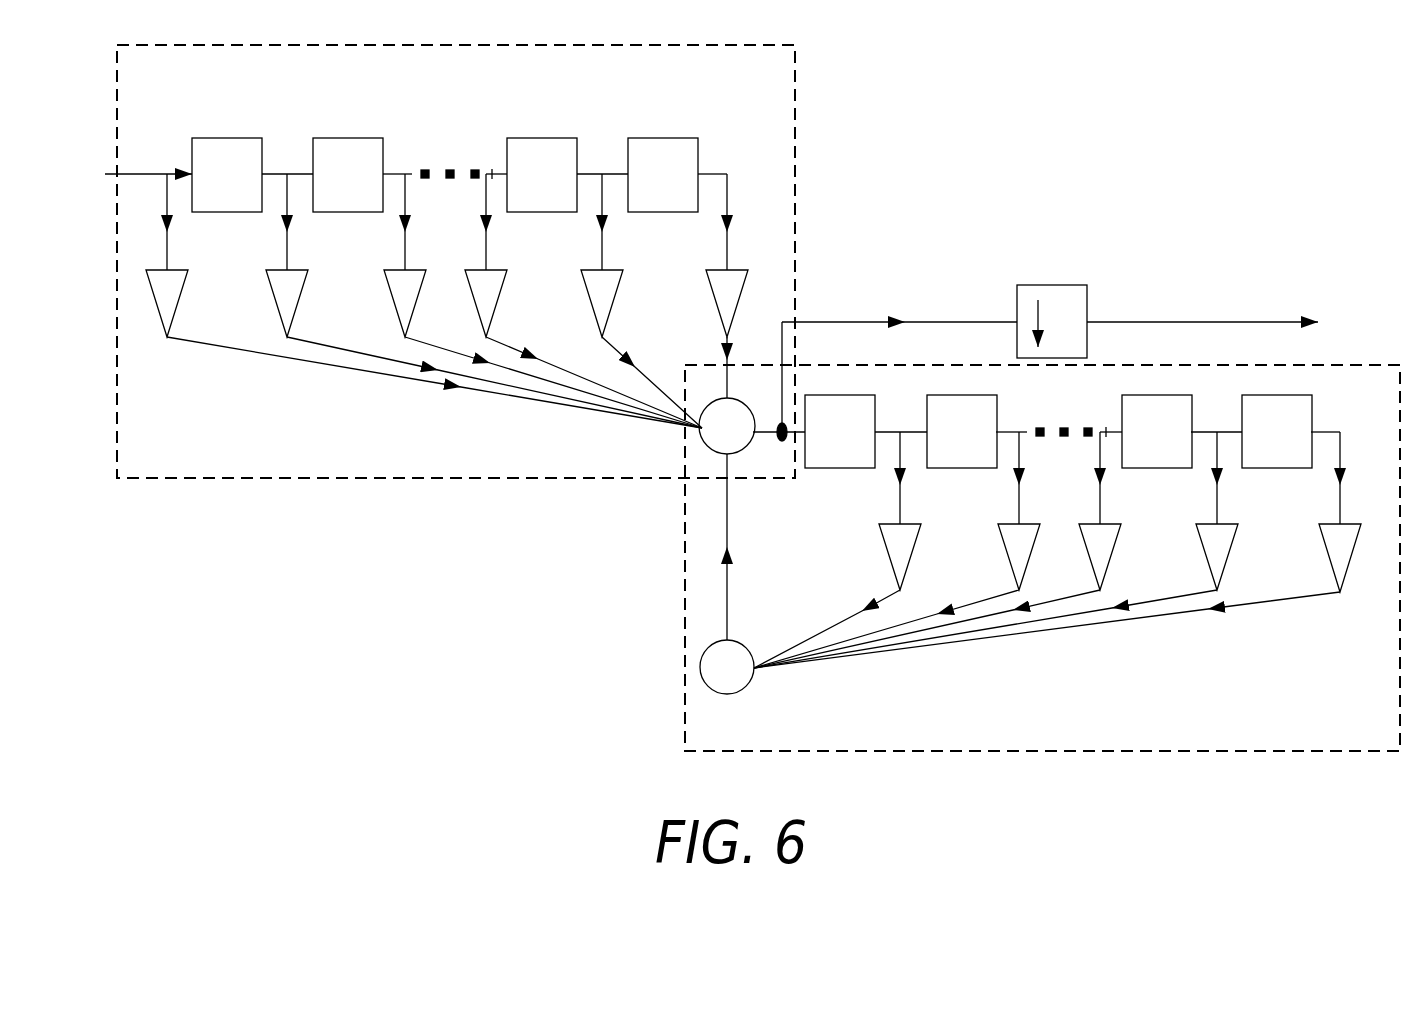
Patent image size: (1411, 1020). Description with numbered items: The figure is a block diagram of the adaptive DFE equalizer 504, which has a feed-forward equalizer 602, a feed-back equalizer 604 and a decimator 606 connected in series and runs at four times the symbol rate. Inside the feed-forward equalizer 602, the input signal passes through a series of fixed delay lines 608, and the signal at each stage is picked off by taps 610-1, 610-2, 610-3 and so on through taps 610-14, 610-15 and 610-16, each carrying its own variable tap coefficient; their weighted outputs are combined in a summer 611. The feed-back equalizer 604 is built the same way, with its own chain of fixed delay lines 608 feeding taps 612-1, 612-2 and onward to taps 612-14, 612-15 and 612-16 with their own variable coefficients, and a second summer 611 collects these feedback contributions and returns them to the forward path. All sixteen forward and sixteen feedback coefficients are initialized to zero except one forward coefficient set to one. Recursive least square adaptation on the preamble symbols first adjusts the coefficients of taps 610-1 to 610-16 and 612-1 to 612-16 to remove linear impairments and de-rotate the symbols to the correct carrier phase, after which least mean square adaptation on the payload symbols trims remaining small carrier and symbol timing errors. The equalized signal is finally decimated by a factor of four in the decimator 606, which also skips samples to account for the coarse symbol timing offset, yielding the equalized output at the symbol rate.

The DFE equalizer 504 is at (1102, 82).
The feed-forward equalizer 602 is at (245, 444).
The feed-back equalizer 604 is at (1362, 728).
The decimator 606 is at (1043, 284).
The fixed delay lines 608 is at (223, 145).
The feed-forward EQ tap 610-1 is at (160, 308).
The feed-forward EQ tap 610-2 is at (282, 300).
The feed-forward EQ tap 610-3 is at (402, 293).
The feed-forward EQ tap 610-14 is at (498, 273).
The feed-forward EQ tap 610-15 is at (600, 295).
The feed-forward EQ tap 610-16 is at (723, 302).
The summer 611 is at (713, 437).
The feed-back EQ tap 612-1 is at (892, 545).
The feed-back EQ tap 612-2 is at (1010, 555).
The feed-back EQ tap 612-14 is at (1110, 553).
The feed-back EQ tap 612-15 is at (1232, 558).
The feed-back EQ tap 612-16 is at (1342, 565).